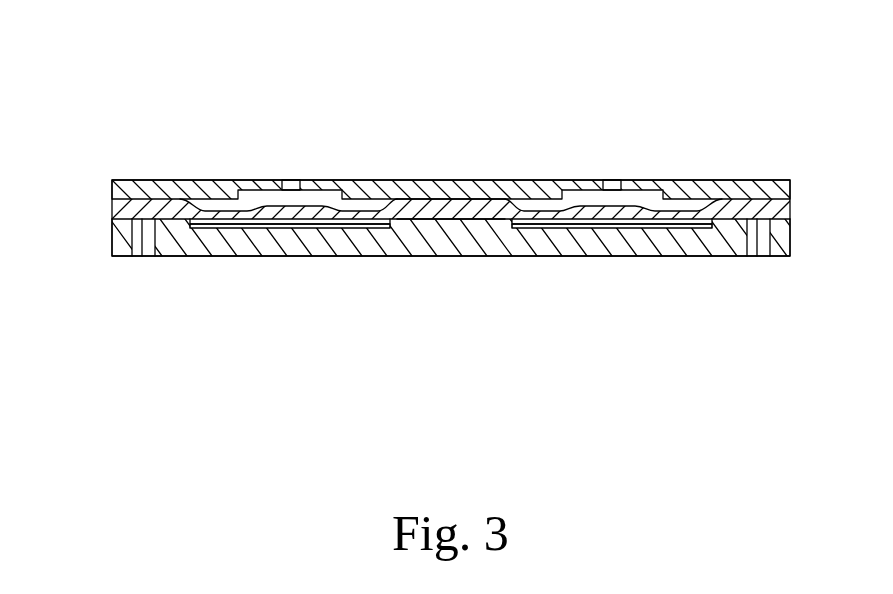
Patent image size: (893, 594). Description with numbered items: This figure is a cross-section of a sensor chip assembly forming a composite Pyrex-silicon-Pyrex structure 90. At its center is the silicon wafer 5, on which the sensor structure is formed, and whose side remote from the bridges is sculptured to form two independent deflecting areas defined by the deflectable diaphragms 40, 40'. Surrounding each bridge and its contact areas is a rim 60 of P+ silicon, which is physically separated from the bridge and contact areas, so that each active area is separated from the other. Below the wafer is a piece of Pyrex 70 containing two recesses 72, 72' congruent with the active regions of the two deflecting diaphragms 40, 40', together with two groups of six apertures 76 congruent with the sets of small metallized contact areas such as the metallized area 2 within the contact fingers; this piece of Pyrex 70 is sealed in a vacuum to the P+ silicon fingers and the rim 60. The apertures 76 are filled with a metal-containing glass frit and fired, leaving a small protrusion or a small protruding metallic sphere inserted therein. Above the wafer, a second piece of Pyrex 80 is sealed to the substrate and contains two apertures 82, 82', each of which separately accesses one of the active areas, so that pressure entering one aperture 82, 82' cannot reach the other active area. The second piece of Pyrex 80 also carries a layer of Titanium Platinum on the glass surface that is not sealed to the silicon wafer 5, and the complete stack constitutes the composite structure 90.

The composite structure 90 is at (548, 110).
The second piece of Pyrex 80 is at (127, 180).
The aperture 82 is at (330, 148).
The aperture 82' is at (657, 148).
The silicon wafer 5 is at (112, 208).
The deflectable diaphragm 40 is at (288, 296).
The deflectable diaphragm 40' is at (613, 283).
The rim 60 is at (458, 212).
The piece of Pyrex 70 is at (112, 242).
The recess 72 is at (293, 284).
The recess 72' is at (612, 302).
The metallized area 2 is at (140, 257).
The apertures 76 is at (150, 257).